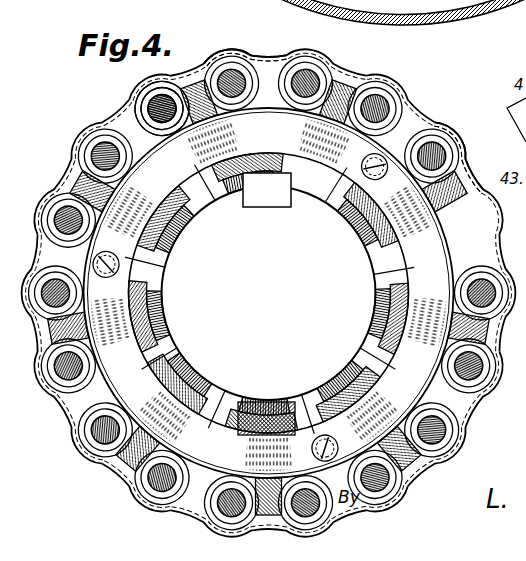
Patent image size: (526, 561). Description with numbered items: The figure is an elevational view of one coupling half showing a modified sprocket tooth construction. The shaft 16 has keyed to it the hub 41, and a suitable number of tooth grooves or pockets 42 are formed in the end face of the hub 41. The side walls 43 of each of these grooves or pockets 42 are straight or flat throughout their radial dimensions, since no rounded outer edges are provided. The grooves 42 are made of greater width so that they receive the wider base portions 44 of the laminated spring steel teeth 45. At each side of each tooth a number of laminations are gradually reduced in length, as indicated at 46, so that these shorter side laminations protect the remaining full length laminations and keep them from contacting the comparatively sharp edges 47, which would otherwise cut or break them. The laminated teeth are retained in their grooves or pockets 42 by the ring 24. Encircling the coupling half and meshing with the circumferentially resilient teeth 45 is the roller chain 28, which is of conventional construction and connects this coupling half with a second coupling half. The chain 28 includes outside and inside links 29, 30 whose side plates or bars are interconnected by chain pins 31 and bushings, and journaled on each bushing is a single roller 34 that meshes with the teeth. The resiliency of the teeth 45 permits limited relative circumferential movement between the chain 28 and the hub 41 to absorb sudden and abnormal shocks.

The shaft 16 is at (269, 293).
The ring 24 is at (372, 360).
The roller chain 28 is at (418, 121).
The outside links 29 is at (269, 67).
The inside links 30 is at (238, 58).
The chain pins 31 is at (310, 78).
The roller 34 is at (147, 97).
The hub 41 is at (165, 357).
The tooth grooves or pockets 42 is at (176, 240).
The side walls 43 is at (164, 301).
The base portions 44 is at (222, 197).
The laminated spring steel teeth 45 is at (348, 86).
The shorter side laminations 46 is at (448, 205).
The sharp edges 47 is at (484, 260).